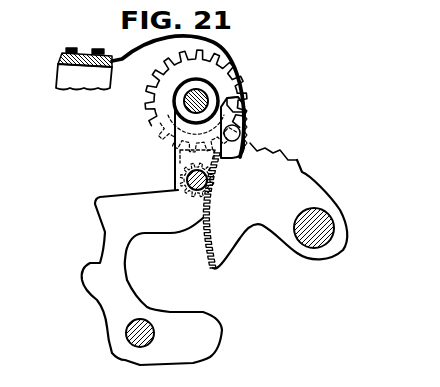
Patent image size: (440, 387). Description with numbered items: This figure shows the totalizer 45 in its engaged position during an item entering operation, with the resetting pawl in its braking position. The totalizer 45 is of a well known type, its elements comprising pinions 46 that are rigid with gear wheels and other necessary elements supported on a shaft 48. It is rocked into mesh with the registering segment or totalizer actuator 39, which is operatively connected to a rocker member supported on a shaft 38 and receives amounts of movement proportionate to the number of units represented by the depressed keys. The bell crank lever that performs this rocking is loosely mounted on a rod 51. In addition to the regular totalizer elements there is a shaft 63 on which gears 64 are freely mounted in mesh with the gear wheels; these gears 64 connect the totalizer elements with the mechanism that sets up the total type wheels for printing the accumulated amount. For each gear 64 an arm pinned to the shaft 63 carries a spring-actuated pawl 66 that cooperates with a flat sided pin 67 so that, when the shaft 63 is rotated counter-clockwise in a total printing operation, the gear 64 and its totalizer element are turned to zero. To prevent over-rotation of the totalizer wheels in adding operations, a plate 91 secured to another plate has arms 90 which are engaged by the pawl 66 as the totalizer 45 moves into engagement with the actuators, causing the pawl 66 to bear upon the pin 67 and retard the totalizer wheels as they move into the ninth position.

The plate 91 is at (62, 57).
The shaft 63 is at (186, 97).
The gear 64 is at (152, 119).
The arm 90 is at (213, 48).
The flat sided pin 67 is at (241, 98).
The spring-actuated pawl 66 is at (244, 106).
The registering segment or totalizer actuator 39 is at (267, 159).
The shaft 48 is at (188, 175).
The pinion 46 is at (182, 184).
The shaft 38 is at (330, 223).
The totalizer 45 is at (123, 258).
The rod 51 is at (133, 342).